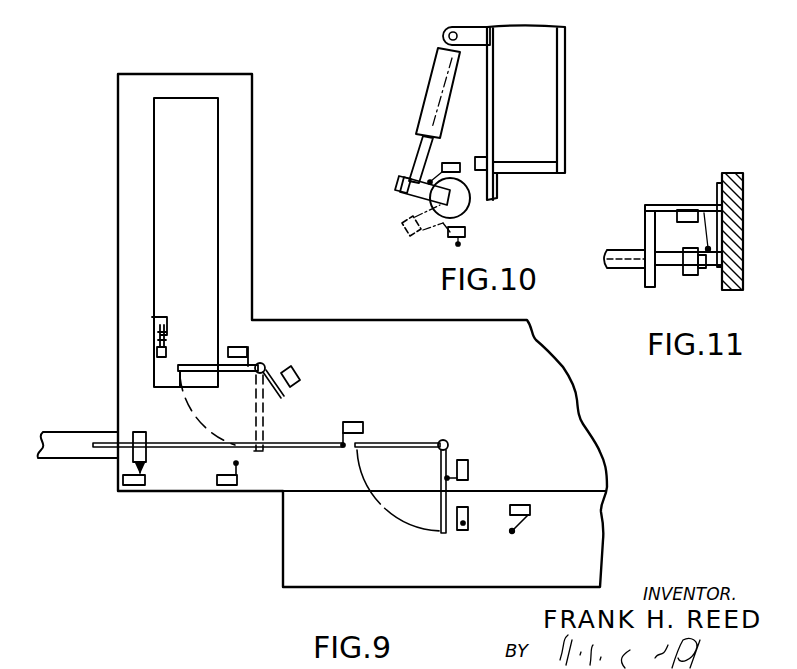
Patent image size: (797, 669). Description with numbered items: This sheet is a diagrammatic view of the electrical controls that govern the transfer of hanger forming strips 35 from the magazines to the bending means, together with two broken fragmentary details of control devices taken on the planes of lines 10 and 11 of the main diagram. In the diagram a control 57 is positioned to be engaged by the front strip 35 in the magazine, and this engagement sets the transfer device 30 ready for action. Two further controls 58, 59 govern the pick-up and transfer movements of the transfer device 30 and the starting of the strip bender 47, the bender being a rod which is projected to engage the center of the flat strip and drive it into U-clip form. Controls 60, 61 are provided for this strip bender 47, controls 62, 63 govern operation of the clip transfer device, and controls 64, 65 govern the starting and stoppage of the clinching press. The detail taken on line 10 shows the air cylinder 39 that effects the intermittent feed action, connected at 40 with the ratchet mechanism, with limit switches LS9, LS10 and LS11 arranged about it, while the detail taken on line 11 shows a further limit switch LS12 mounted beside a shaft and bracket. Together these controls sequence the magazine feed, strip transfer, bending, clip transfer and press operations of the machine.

In FIG. 9, the hanger forming strip 35 is at (162, 122).
In FIG. 9, the section line 10— 10 is at (97, 233).
In FIG. 9, the section line 11— 11 is at (562, 450).
In FIG. 9, the transfer device 30 is at (264, 364).
In FIG. 10, the air cylinder 39 is at (432, 78).
In FIG. 10, the connection to ratchet mechanism 40 is at (404, 192).
In FIG. 9, the bender rod 47 is at (100, 453).
In FIG. 9, the control 57 is at (152, 323).
In FIG. 9, the control 58 is at (244, 344).
In FIG. 9, the control 59 is at (301, 362).
In FIG. 9, the control 60 is at (147, 483).
In FIG. 9, the control 61 is at (243, 484).
In FIG. 9, the control 62 is at (357, 418).
In FIG. 9, the control 63 is at (469, 459).
In FIG. 9, the control 64 is at (462, 535).
In FIG. 9, the control 65 is at (540, 512).
In FIG. 10, the limit switch LS9 is at (474, 162).
In FIG. 10, the limit switch LS10 is at (459, 244).
In FIG. 10, the limit switch LS11 is at (437, 163).
In FIG. 11, the limit switch LS12 is at (688, 205).